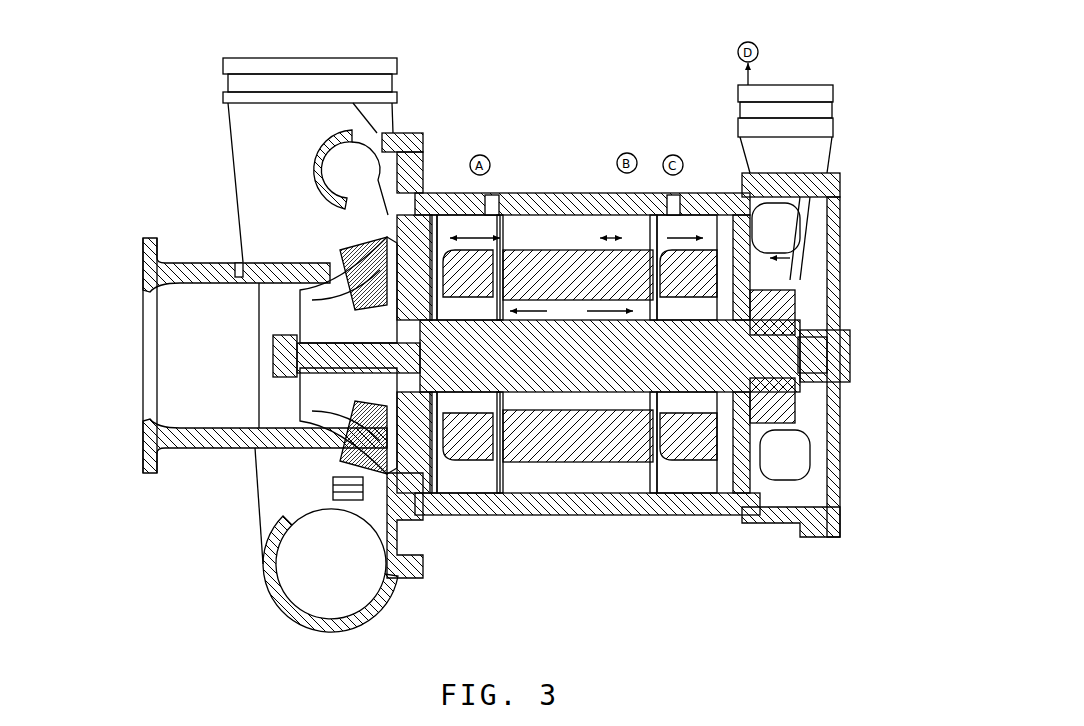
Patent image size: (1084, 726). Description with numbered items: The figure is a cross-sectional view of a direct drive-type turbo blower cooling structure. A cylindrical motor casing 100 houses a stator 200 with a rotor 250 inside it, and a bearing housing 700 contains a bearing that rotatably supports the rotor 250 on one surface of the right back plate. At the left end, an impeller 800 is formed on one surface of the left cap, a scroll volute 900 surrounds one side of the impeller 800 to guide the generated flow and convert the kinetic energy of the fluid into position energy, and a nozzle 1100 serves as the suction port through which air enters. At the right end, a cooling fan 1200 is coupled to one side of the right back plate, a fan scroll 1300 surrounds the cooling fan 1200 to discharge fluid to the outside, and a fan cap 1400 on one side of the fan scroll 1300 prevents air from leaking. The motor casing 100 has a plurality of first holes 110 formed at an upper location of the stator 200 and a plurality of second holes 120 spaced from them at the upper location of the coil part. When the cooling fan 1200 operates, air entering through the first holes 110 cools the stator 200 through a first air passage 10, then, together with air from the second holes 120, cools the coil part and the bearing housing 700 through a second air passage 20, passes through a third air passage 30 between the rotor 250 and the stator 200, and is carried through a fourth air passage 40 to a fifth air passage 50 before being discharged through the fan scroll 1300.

The first air passage 10 is at (576, 239).
The second air passage 20 is at (466, 354).
The third air passage 30 is at (571, 312).
The fourth air passage 40 is at (695, 354).
The fifth air passage 50 is at (792, 258).
The motor casing 100 is at (548, 192).
The first holes 110 is at (630, 203).
The second holes 120 is at (487, 192).
The stator 200 is at (557, 433).
The rotor 250 is at (290, 345).
The bearing housing 700 is at (497, 507).
The impeller 800 is at (312, 390).
The scroll volute 900 is at (243, 150).
The nozzle 1100 is at (145, 450).
The cooling fan 1200 is at (783, 325).
The fan scroll 1300 is at (823, 110).
The fan cap 1400 is at (835, 225).